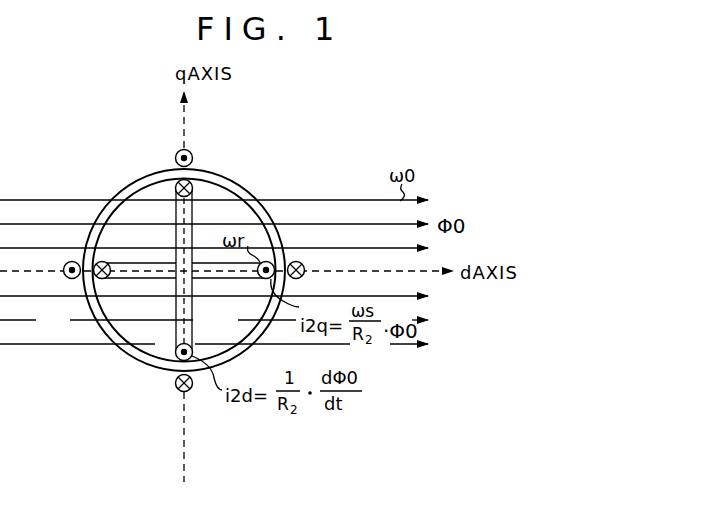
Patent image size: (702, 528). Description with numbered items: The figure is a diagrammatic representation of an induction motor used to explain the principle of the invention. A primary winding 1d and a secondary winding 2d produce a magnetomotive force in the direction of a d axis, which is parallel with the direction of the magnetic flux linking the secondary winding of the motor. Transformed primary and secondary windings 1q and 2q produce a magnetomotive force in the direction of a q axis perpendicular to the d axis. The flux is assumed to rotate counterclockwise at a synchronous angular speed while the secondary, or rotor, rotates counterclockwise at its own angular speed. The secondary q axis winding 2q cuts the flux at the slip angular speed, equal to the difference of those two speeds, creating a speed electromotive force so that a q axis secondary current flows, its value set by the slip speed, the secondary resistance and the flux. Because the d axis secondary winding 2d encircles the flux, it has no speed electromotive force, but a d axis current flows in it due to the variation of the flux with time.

The primary winding 1d is at (193, 156).
The transformed primary winding 1q is at (68, 279).
The secondary winding 2d is at (195, 322).
The secondary q axis winding 2q is at (150, 262).